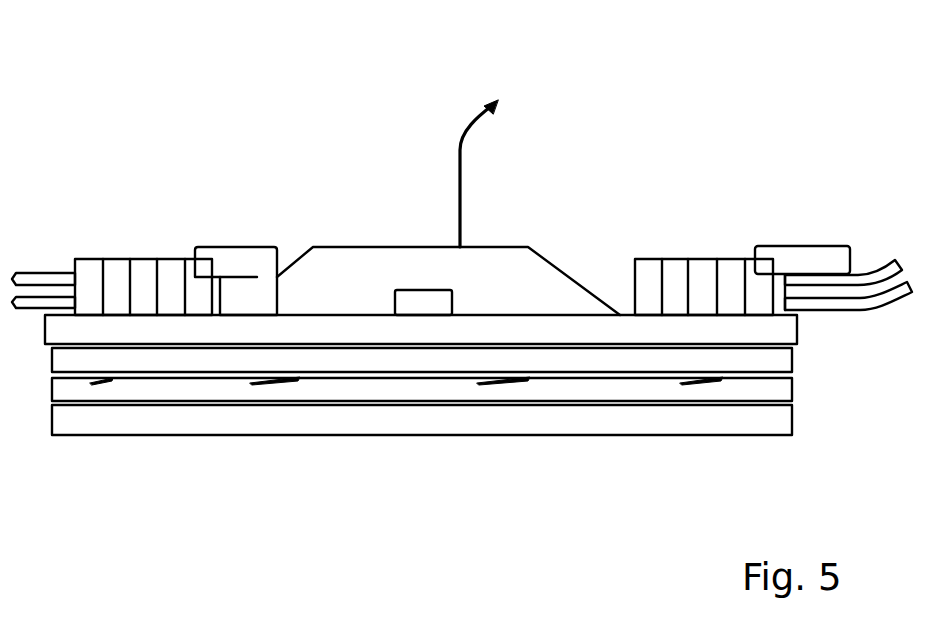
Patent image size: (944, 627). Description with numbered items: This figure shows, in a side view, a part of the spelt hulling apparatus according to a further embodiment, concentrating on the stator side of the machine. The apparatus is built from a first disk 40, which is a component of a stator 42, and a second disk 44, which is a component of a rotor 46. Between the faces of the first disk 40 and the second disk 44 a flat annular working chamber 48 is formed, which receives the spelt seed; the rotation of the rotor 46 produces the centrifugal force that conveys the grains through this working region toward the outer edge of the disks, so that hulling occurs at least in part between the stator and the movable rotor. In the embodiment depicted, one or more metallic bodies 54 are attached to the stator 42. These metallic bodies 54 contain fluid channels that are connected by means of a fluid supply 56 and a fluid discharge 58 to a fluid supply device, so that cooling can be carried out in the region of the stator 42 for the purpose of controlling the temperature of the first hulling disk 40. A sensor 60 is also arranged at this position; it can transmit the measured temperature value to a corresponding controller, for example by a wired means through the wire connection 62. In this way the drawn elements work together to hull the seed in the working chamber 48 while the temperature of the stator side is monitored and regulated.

The first disk 40 is at (757, 362).
The stator 42 is at (343, 330).
The second disk 44 is at (757, 392).
The rotor 46 is at (757, 423).
The working chamber 48 is at (627, 368).
The metallic bodies 54 is at (155, 285).
The fluid supply 56 is at (22, 303).
The fluid discharge 58 is at (44, 275).
The sensor 60 is at (410, 300).
The wire connection 62 is at (460, 148).